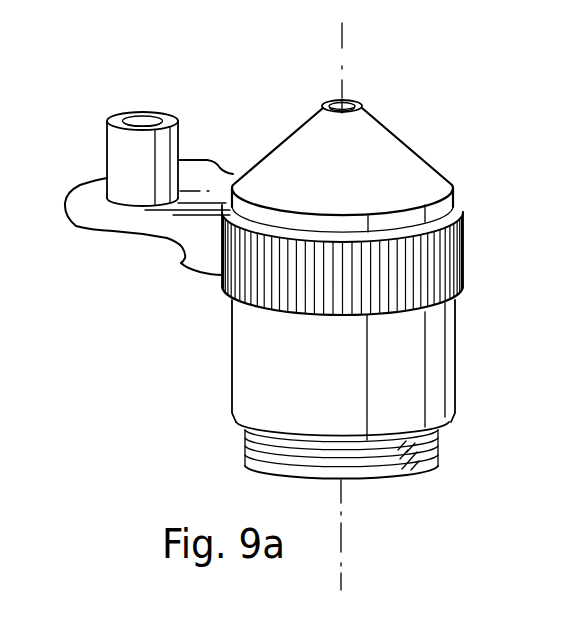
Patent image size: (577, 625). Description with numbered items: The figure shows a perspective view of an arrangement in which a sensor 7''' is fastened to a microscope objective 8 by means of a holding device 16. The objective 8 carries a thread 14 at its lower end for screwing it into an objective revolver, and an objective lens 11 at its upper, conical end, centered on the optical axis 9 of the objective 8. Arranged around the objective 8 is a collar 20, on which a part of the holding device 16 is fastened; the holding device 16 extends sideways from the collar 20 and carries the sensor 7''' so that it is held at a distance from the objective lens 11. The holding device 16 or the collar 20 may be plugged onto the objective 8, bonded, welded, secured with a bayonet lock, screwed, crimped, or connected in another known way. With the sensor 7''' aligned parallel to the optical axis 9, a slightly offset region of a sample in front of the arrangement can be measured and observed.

The optical axis 9 is at (342, 38).
The objective lens 11 is at (352, 103).
The collar 20 is at (445, 243).
The objective 8 is at (435, 333).
The thread 14 is at (433, 448).
The holding device 16 is at (197, 258).
The sensor 7''' is at (169, 144).